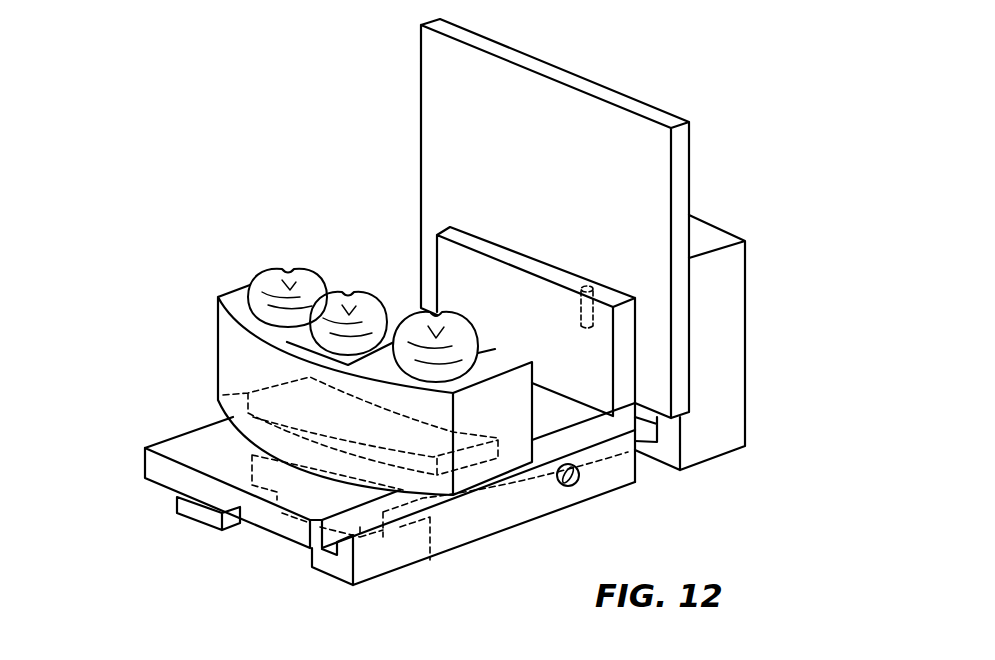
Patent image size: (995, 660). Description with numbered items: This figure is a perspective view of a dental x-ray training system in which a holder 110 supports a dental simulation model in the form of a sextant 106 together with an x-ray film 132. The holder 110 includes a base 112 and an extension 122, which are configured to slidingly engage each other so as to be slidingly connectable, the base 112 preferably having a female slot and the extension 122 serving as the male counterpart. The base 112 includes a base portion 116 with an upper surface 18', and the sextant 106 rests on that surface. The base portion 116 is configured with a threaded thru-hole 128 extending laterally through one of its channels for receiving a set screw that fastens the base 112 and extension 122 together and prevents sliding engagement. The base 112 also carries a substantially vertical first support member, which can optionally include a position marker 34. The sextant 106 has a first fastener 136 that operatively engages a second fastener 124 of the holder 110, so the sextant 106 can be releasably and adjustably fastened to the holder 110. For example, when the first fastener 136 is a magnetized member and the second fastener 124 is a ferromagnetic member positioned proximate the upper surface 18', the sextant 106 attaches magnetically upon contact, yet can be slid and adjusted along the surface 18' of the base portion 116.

The x-ray film 132 is at (583, 80).
The extension 122 is at (747, 295).
The position marker 34 is at (578, 316).
The holder 110 is at (324, 228).
The sextant 106 is at (228, 345).
The first fastener 136 is at (240, 400).
The upper surface 18' is at (362, 459).
The base portion 116 is at (182, 483).
The base 112 is at (126, 461).
The threaded thru-hole 128 is at (579, 482).
The second fastener 124 is at (432, 565).